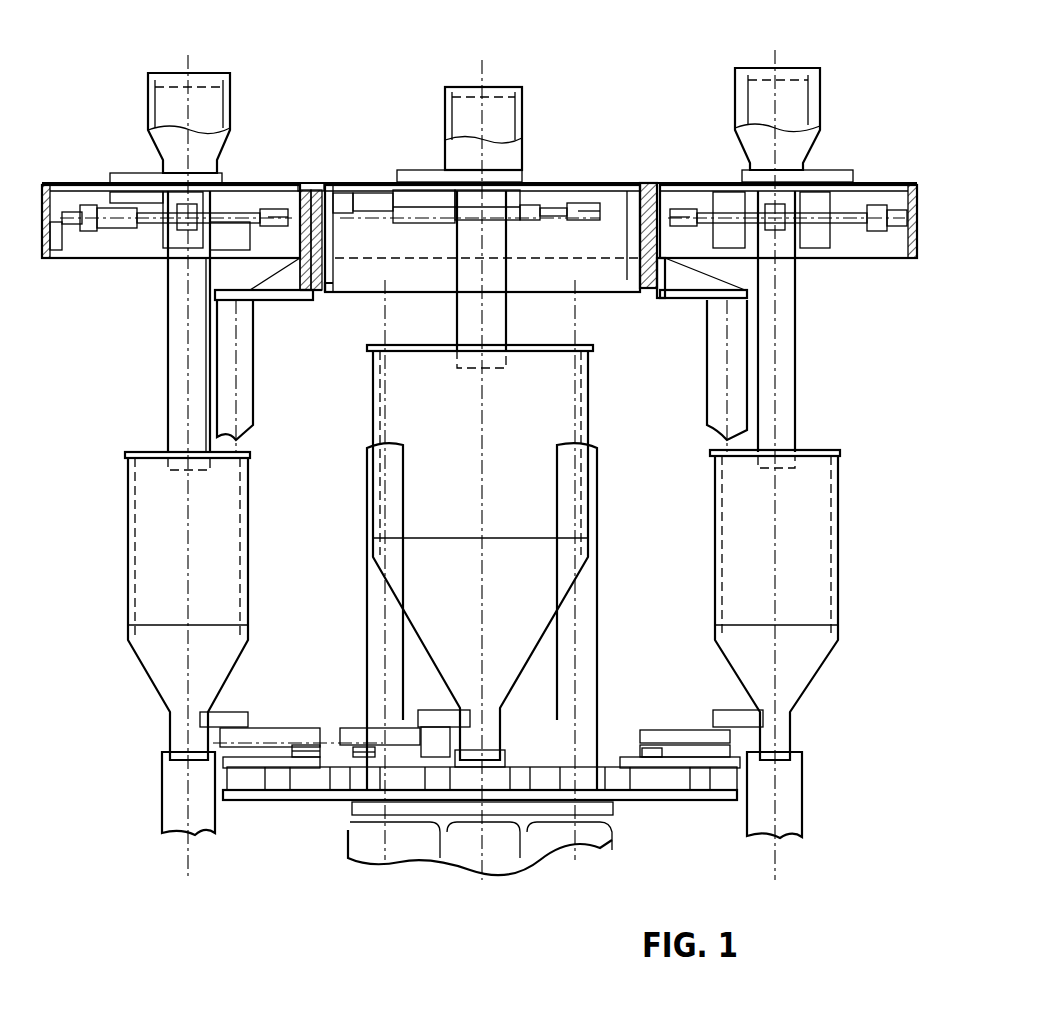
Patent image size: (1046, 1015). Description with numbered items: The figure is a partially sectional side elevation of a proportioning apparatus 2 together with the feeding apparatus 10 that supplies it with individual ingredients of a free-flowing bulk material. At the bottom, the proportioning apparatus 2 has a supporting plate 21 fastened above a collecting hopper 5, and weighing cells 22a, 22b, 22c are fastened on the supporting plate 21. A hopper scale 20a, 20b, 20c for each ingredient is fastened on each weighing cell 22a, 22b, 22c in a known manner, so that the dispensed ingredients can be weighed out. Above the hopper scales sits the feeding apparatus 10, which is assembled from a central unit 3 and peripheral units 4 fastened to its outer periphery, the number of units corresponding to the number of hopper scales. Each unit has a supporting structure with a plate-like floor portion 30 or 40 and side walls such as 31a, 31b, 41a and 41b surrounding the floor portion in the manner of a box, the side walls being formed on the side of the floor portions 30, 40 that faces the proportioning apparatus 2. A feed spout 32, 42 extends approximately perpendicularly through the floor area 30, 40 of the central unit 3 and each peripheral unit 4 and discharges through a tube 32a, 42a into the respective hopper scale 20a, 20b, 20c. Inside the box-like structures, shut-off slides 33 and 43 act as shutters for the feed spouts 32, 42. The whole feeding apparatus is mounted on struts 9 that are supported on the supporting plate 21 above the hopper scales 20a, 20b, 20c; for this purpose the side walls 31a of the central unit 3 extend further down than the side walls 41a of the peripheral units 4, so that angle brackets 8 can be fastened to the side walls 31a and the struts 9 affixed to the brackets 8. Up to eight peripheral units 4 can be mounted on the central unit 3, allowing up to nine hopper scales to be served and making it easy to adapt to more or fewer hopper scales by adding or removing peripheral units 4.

The proportioning apparatus 2 is at (812, 440).
The central unit 3 is at (533, 180).
The peripheral unit 4 is at (273, 180).
The collecting hopper 5 is at (607, 833).
The angle bracket 8 is at (307, 297).
The strut 9 is at (252, 397).
The feeding apparatus 10 is at (612, 162).
The hopper scale 20a is at (593, 422).
The hopper scale 20b is at (250, 517).
The hopper scale 20c is at (840, 518).
The supporting plate 21 is at (287, 793).
The weighing cell 22a is at (353, 727).
The weighing cell 22b is at (263, 727).
The weighing cell 22c is at (665, 730).
The floor portion 30 is at (367, 180).
The side wall 31a is at (323, 180).
The central housing lower wall 31b is at (330, 292).
The feed spout 32 is at (500, 86).
The tube 32a is at (507, 323).
The shut-off slide 33 is at (433, 187).
The floor portion 40 is at (82, 185).
The side wall 41a is at (300, 195).
The side wall 41b is at (118, 243).
The feed spout 42 is at (203, 73).
The tube 42a is at (167, 375).
The shut-off slide 43 is at (138, 193).